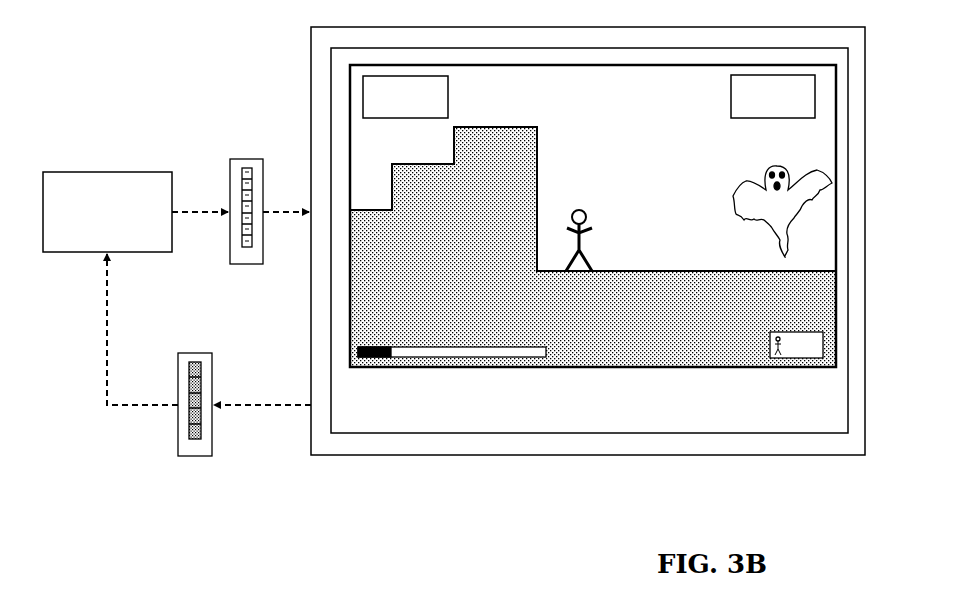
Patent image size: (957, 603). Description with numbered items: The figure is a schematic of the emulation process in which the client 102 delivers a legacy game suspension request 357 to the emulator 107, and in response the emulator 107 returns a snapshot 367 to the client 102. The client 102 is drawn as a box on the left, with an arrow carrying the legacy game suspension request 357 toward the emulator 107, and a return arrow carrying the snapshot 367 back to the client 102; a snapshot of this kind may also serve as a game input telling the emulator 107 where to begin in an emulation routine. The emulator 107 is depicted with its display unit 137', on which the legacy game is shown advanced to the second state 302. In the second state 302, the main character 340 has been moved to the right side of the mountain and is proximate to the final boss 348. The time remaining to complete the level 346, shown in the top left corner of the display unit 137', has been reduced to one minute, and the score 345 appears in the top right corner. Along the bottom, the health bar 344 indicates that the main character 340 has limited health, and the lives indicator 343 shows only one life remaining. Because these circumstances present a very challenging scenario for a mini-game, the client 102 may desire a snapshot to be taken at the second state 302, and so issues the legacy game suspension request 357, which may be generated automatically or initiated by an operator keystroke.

The client 102 is at (112, 170).
The emulator 107 is at (311, 37).
The emulator's display unit 137' is at (589, 272).
The second state 302 is at (569, 105).
The main character 340 is at (592, 212).
The lives 343 is at (770, 346).
The health bar 344 is at (503, 358).
The score 345 is at (731, 100).
The time remaining to complete the level 346 is at (448, 88).
The final boss 348 is at (800, 167).
The legacy game suspension request 357 is at (248, 268).
The snapshot 367 is at (190, 458).